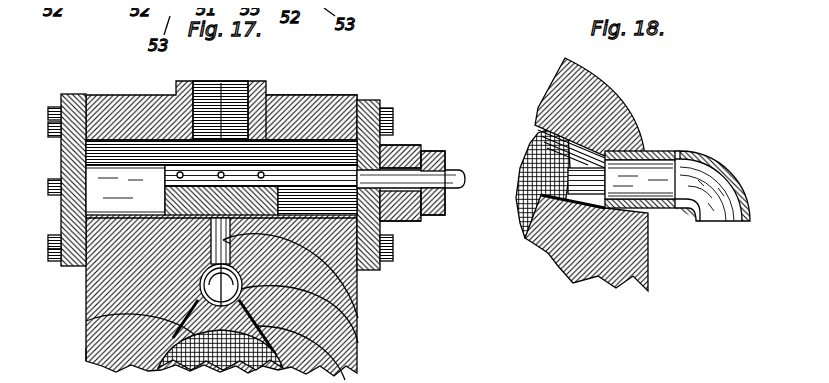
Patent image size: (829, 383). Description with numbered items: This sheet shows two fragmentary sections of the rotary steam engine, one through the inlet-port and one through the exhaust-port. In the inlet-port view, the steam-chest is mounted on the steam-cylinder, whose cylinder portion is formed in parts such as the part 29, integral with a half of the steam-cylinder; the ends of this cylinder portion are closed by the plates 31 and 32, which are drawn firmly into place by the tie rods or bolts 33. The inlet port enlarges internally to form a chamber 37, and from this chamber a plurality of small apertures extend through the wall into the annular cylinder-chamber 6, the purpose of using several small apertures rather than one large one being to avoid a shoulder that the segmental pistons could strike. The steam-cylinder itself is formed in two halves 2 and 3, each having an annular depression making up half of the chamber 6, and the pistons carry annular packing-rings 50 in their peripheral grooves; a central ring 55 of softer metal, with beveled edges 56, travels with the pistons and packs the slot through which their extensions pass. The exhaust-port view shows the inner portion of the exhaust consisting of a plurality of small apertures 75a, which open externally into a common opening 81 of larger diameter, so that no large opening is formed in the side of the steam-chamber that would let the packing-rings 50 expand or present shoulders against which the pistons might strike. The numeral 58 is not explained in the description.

In FIG. 17, the steam-chest cylinder part 29 is at (124, 105).
In FIG. 17, the end plate 31 is at (53, 86).
In FIG. 17, the end plate 32 is at (372, 96).
In FIG. 17, the tie rods or bolts 33 is at (47, 122).
In FIG. 17, the annular packing-rings 50 is at (316, 92).
In FIG. 17, the beveled edges 56 is at (246, 128).
In FIG. 17, the central ring 55 is at (350, 262).
In FIG. 17, the steam-cylinder half 2 is at (351, 305).
In FIG. 18, the steam-cylinder half 2 is at (610, 100).
In FIG. 17, the chamber 37 is at (351, 312).
In FIG. 17, the passage 58 is at (78, 318).
In FIG. 17, the steam-cylinder half 3 is at (79, 358).
In FIG. 17, the circular cylinder-chamber 6 is at (220, 335).
In FIG. 18, the circular cylinder-chamber 6 is at (533, 188).
In FIG. 18, the small apertures 75a is at (622, 118).
In FIG. 18, the common opening 81 is at (648, 178).